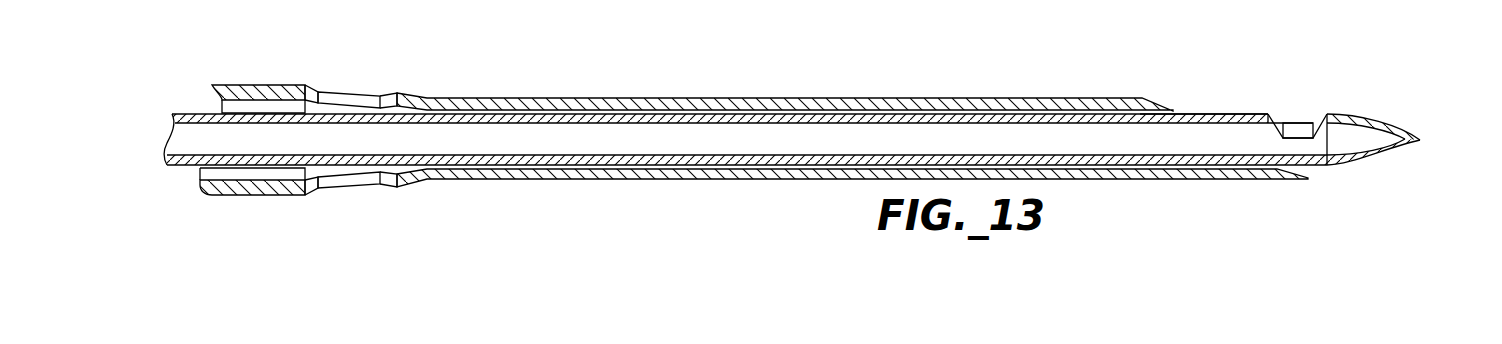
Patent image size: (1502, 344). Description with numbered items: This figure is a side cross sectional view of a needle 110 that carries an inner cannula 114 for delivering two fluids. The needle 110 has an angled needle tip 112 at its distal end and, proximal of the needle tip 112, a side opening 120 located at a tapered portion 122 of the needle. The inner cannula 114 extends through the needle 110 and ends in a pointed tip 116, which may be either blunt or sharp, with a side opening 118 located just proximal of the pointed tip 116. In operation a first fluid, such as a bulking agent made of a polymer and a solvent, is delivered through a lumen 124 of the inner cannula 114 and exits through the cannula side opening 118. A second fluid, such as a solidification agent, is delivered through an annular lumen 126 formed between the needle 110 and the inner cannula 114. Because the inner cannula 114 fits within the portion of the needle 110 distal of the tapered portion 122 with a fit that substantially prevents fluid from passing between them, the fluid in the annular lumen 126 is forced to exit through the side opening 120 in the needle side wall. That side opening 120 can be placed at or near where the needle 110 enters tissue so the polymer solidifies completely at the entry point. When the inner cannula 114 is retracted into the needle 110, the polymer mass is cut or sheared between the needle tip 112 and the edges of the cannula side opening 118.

The needle 110 is at (962, 98).
The needle tip 112 is at (1305, 171).
The inner cannula 114 is at (1213, 113).
The pointed tip 116 is at (1395, 124).
The side opening 118 is at (1300, 128).
The side opening 120 is at (353, 102).
The tapered portion 122 is at (405, 183).
The lumen 124 is at (762, 140).
The annular lumen 126 is at (237, 168).